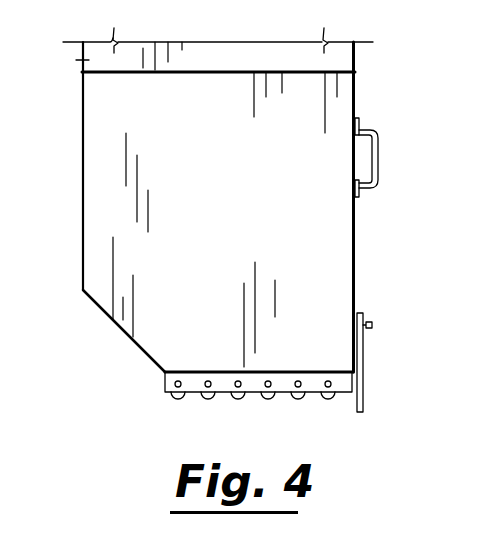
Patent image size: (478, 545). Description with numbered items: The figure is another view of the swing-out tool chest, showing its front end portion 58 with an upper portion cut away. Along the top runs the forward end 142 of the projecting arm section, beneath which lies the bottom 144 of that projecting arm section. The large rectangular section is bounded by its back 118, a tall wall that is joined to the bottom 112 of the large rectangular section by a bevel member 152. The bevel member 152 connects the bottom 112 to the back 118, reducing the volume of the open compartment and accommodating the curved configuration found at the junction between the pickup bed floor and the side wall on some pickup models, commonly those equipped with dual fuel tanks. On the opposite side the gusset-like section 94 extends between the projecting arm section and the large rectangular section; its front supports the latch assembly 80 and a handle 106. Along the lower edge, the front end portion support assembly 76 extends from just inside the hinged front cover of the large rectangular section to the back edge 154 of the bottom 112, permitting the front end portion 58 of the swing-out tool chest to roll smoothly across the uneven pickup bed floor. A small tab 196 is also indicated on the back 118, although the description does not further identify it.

The front end portion 58 is at (118, 352).
The forward end 142 is at (222, 48).
The bottom 144 is at (197, 75).
The mounting tab 196 is at (76, 60).
The back 118 is at (82, 173).
The bevel member 152 is at (137, 342).
The gusset-like section 94 is at (355, 227).
The handle 106 is at (379, 148).
The latch assembly 80 is at (384, 347).
The back edge 154 is at (172, 371).
The bottom 112 is at (267, 371).
The front end portion support assembly 76 is at (158, 392).